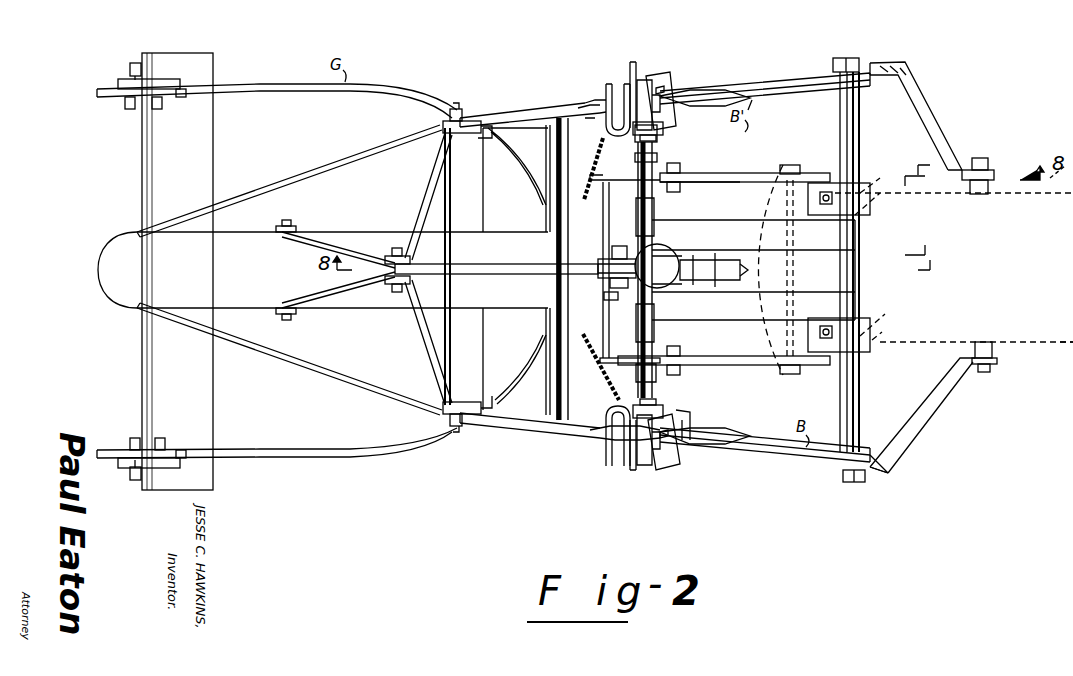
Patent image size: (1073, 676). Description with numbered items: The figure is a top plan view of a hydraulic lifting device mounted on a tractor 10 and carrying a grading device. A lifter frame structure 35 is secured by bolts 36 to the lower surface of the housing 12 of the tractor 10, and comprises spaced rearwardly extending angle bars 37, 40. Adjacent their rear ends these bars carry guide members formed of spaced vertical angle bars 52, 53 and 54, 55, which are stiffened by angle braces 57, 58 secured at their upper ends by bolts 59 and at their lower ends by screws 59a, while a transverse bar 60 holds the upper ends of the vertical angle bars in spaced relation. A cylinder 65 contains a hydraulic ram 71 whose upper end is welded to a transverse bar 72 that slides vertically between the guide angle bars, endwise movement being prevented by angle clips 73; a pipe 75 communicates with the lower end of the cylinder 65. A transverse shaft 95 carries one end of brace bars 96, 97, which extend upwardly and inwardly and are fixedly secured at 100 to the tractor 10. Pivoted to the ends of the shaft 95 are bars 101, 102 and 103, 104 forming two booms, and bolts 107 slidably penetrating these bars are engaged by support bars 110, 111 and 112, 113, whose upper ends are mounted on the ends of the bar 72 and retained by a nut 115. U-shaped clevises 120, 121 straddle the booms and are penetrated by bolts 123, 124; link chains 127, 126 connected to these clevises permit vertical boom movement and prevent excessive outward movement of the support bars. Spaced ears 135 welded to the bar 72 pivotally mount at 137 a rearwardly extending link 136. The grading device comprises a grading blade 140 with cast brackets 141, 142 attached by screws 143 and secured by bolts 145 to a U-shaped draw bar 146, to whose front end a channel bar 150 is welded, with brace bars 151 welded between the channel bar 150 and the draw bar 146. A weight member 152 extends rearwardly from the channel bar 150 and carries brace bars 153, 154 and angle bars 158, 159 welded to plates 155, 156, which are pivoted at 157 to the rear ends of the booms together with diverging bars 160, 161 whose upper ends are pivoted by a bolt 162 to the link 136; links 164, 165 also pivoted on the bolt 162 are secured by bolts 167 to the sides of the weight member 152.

The tractor 10 is at (1072, 356).
The housing 12 is at (778, 250).
The lifter frame structure 35 is at (738, 174).
The bolts 36 is at (880, 324).
The angle bar 37 is at (712, 218).
The angle bar 40 is at (746, 318).
The angle bar 52 is at (620, 170).
The angle bar 53 is at (666, 150).
The angle bar 54 is at (625, 380).
The angle bar 55 is at (664, 378).
The angle brace 57 is at (730, 366).
The angle brace 58 is at (722, 184).
The bolts 59 is at (688, 350).
The screws 59a is at (796, 384).
The transverse bar 60 is at (662, 394).
The cylinder 65 is at (670, 256).
The hydraulic ram 71 is at (686, 282).
The transverse bar 72 is at (660, 297).
The angle clips 73 is at (653, 328).
The pipe 75 is at (720, 260).
The transverse shaft 95 is at (866, 392).
The brace bar 96 is at (952, 140).
The brace bar 97 is at (938, 430).
The securing point 100 is at (1000, 376).
The bar 101 is at (770, 456).
The bar 102 is at (774, 436).
The bar 103 is at (776, 106).
The bar 104 is at (792, 80).
The bolts 107 is at (627, 476).
The support bar 110 is at (655, 470).
The support bar 111 is at (690, 445).
The support bar 112 is at (684, 90).
The support bar 113 is at (669, 70).
The nut 115 is at (675, 416).
The U-shaped clevis 120 is at (612, 82).
The U-shaped clevis 121 is at (610, 466).
The bolt 123 is at (633, 55).
The bolt 124 is at (608, 418).
The link chain 126 is at (590, 378).
The link chain 127 is at (596, 150).
The ears 135 is at (600, 262).
The link 136 is at (518, 264).
The pivot 137 is at (604, 296).
The grading blade 140 is at (214, 474).
The cast bracket 141 is at (118, 84).
The cast bracket 142 is at (120, 458).
The screws 143 is at (141, 474).
The bolts 145 is at (142, 433).
The U-shaped draw bar 146 is at (293, 462).
The channel bar 150 is at (544, 206).
The brace bars 151 is at (546, 406).
The weight member 152 is at (503, 320).
The brace bar 153 is at (342, 166).
The brace bar 154 is at (274, 360).
The plate 155 is at (438, 128).
The plate 156 is at (440, 410).
The pivot 157 is at (456, 428).
The angle bar 158 is at (485, 180).
The angle bar 159 is at (485, 352).
The diverging bar 160 is at (426, 200).
The diverging bar 161 is at (424, 343).
The bolt 162 is at (412, 286).
The link 164 is at (336, 226).
The link 165 is at (338, 300).
The bolts 167 is at (274, 320).